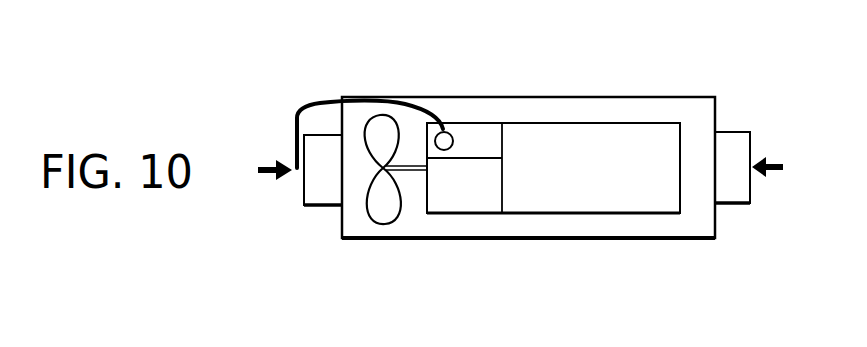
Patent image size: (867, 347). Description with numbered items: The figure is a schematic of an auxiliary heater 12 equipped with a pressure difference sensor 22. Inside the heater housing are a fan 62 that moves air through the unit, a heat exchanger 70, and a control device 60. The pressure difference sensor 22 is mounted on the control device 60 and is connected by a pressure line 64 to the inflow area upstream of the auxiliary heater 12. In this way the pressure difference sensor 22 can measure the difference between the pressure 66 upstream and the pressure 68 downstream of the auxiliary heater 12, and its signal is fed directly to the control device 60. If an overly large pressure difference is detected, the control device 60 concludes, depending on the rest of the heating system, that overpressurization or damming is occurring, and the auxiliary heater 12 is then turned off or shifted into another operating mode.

The auxiliary heater 12 is at (623, 240).
The pressure difference sensor 22 is at (444, 150).
The control device 60 is at (478, 123).
The fan 62 is at (372, 200).
The pressure line 64 is at (294, 137).
The pressure upstream 66 is at (262, 178).
The pressure downstream 68 is at (780, 175).
The heat exchanger 70 is at (557, 215).